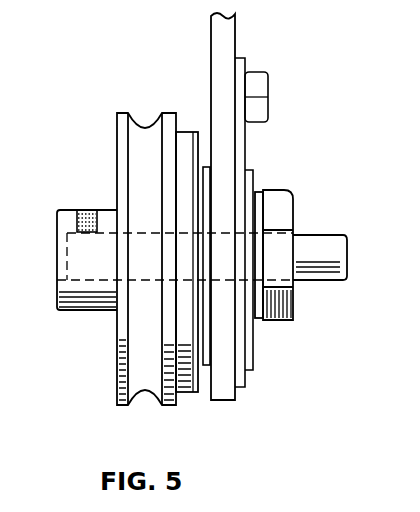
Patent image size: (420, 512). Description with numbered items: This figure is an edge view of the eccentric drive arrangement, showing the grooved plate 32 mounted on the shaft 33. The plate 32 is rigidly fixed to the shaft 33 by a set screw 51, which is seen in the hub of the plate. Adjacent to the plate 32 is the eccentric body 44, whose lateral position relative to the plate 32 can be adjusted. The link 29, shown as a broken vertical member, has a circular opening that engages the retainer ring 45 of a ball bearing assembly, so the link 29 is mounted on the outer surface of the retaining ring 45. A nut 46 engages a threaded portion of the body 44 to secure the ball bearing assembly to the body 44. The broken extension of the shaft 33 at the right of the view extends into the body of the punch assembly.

The link 29 is at (211, 33).
The plate 32 is at (116, 397).
The shaft 33 is at (313, 281).
The body 44 is at (190, 392).
The retainer ring 45 is at (254, 174).
The nut 46 is at (291, 200).
The set screw 51 is at (80, 210).